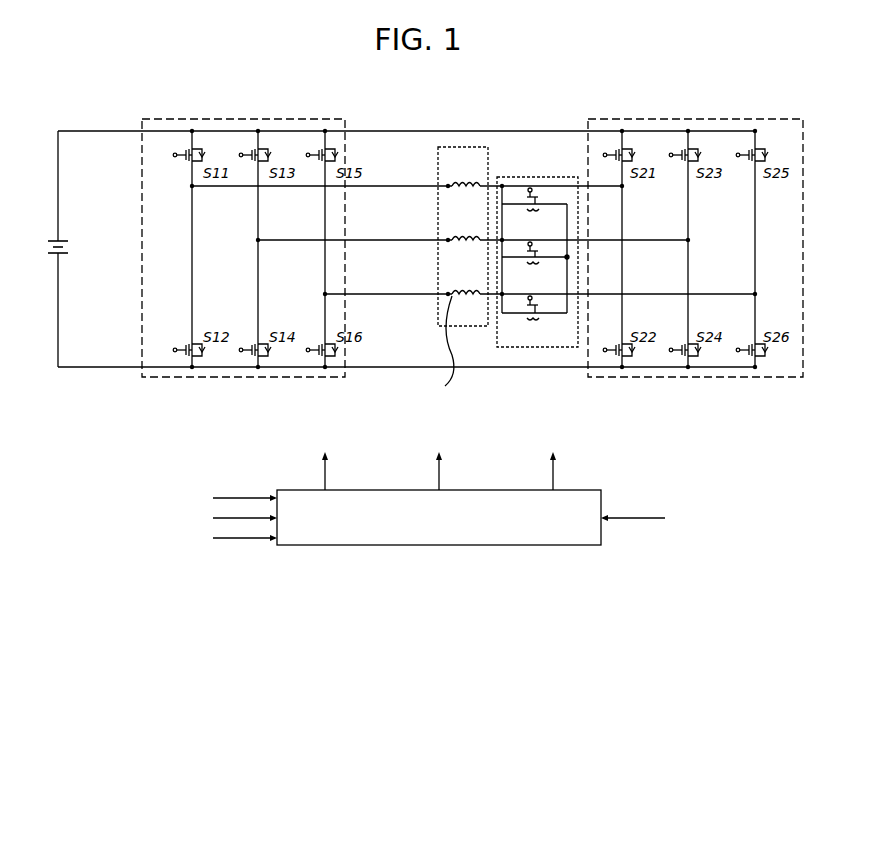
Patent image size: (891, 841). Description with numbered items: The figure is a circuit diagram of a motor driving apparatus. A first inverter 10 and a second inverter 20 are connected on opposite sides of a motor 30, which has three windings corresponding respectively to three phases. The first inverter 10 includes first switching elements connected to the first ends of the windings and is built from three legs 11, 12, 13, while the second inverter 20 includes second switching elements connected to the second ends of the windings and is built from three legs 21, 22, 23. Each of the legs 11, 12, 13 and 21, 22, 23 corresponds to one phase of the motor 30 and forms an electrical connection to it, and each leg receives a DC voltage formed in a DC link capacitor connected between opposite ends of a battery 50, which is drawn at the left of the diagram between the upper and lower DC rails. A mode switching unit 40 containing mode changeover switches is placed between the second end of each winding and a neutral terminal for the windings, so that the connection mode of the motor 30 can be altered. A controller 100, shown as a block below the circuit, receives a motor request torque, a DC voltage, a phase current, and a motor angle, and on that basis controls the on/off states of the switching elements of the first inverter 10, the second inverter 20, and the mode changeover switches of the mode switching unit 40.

The first inverter 10 is at (228, 119).
The second inverter 20 is at (688, 119).
The motor 30 is at (460, 147).
The mode switching unit 40 is at (530, 177).
The battery 50 is at (52, 240).
The leg 11 is at (192, 377).
The leg 12 is at (258, 377).
The leg 13 is at (325, 377).
The leg 21 is at (622, 377).
The leg 22 is at (688, 377).
The leg 23 is at (755, 377).
The controller 100 is at (601, 490).